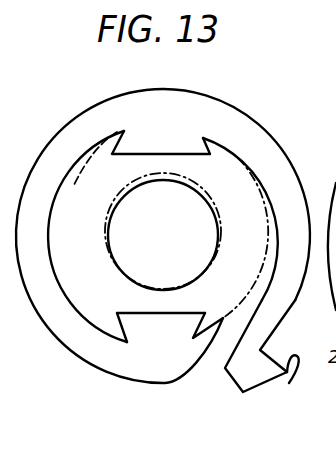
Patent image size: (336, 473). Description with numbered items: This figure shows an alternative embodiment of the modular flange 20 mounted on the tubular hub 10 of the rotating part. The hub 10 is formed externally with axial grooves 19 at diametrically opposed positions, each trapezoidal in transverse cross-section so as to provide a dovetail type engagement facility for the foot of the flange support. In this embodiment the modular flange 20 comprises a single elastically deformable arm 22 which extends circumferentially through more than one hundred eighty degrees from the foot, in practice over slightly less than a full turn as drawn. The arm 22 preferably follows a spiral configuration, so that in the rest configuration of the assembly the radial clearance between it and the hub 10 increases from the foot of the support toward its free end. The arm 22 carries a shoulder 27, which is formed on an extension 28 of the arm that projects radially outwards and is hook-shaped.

The tubular hub 10 is at (139, 148).
The axial groove 19 is at (176, 153).
The modular flange 20 is at (268, 124).
The elastically deformable arm 22 is at (285, 180).
The shoulder 27 is at (183, 320).
The extension 28 is at (243, 392).